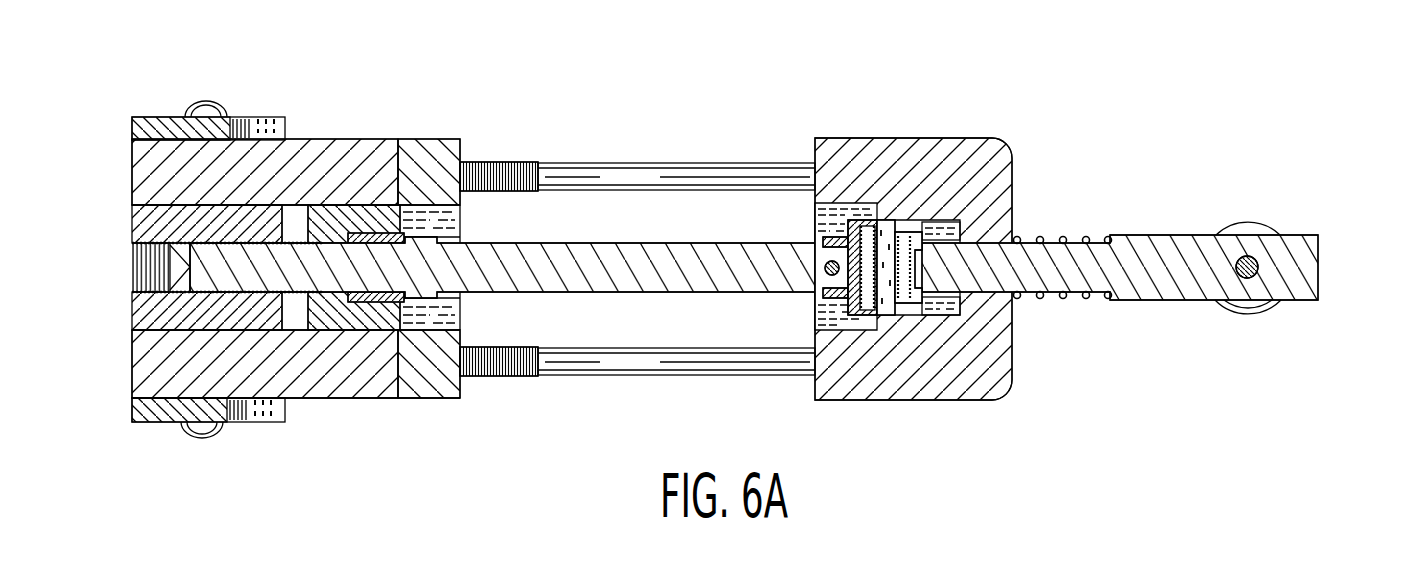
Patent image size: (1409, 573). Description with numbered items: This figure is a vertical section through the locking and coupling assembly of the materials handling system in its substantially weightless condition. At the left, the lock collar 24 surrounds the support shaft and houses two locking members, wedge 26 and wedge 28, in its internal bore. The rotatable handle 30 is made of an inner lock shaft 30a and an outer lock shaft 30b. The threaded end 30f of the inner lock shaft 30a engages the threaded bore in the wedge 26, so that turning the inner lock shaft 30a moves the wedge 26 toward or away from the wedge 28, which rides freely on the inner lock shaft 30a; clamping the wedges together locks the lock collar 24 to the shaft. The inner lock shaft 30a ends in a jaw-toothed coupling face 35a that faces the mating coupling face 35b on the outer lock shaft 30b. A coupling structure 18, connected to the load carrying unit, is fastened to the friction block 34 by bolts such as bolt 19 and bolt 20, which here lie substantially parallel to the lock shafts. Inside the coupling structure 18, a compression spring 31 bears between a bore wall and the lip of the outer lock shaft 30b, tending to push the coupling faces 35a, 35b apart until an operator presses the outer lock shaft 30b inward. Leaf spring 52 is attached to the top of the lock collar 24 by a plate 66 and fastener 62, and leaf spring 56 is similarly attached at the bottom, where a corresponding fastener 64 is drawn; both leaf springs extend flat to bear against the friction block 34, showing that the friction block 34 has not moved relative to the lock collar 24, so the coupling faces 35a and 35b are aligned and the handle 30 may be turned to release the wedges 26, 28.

The coupling structure 18 is at (937, 138).
The bolt 19 is at (643, 182).
The bolt 20 is at (602, 355).
The lock collar 24 is at (165, 376).
The wedge 26 is at (157, 227).
The wedge 28 is at (355, 222).
The handle 30 is at (1320, 269).
The inner lock shaft 30a is at (570, 277).
The outer lock shaft 30b is at (1073, 272).
The threaded end 30f is at (140, 272).
The compression spring 31 is at (1092, 236).
The friction block 34 is at (435, 357).
The coupling face 35a is at (866, 310).
The coupling face 35b is at (903, 310).
The leaf spring 52 is at (350, 137).
The leaf spring 56 is at (357, 404).
The fastener 62 is at (208, 100).
The lower knob 64 is at (199, 437).
The plate 66 is at (140, 130).